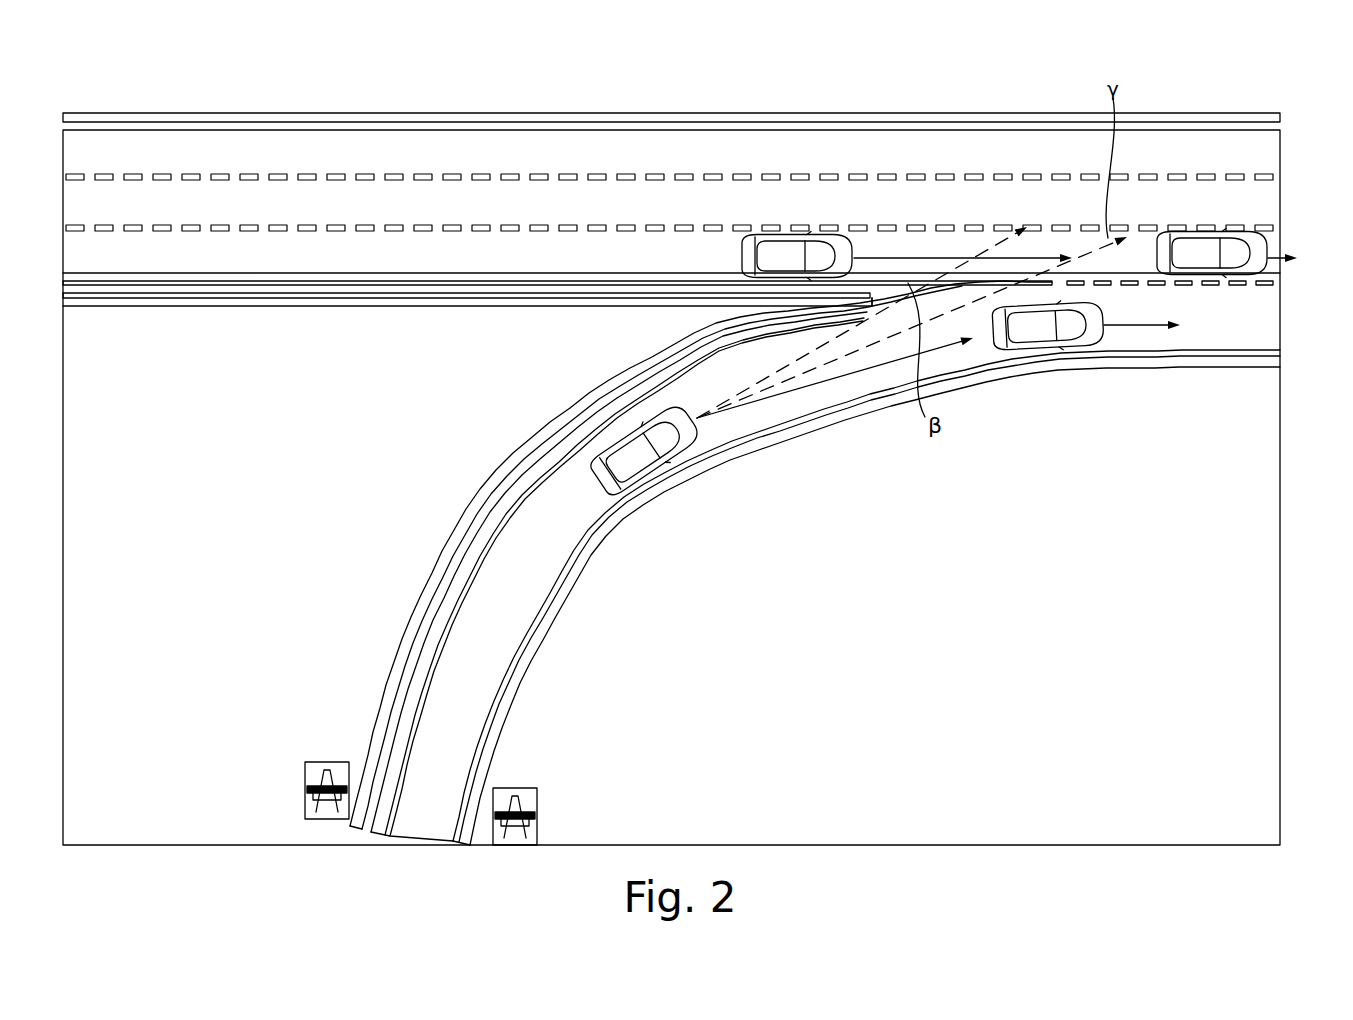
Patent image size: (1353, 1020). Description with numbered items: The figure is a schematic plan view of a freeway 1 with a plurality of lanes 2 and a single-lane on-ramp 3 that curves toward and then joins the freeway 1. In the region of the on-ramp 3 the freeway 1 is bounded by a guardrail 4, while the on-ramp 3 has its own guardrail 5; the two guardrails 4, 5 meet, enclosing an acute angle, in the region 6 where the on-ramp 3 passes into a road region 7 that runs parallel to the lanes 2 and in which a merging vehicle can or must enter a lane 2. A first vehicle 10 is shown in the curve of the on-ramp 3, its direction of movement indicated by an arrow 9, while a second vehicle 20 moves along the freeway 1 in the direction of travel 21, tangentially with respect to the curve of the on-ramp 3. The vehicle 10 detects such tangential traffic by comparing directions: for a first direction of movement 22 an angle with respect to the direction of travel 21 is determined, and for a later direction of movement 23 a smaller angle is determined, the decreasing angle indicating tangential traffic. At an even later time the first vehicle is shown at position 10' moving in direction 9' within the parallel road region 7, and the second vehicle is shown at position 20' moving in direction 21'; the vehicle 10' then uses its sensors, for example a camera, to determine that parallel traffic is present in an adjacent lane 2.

The freeway 1 is at (196, 104).
The lanes 2 is at (290, 162).
The on-ramp 3 is at (498, 657).
The guardrail 4 is at (220, 307).
The guardrail 5 is at (482, 508).
The region in which the guardrails meet 6 is at (880, 293).
The road region 7 is at (1255, 318).
The arrow indicating direction of movement 9 is at (835, 394).
The direction of travel 9' is at (1142, 373).
The vehicle 10 is at (617, 475).
The vehicle at later position 10' is at (1048, 366).
The second vehicle 20 is at (805, 177).
The second vehicle at later position 20' is at (1224, 174).
The direction of travel 21 is at (963, 164).
The direction of movement 21' is at (1303, 213).
The first direction of movement 22 is at (1035, 268).
The direction of movement 23 is at (1195, 250).